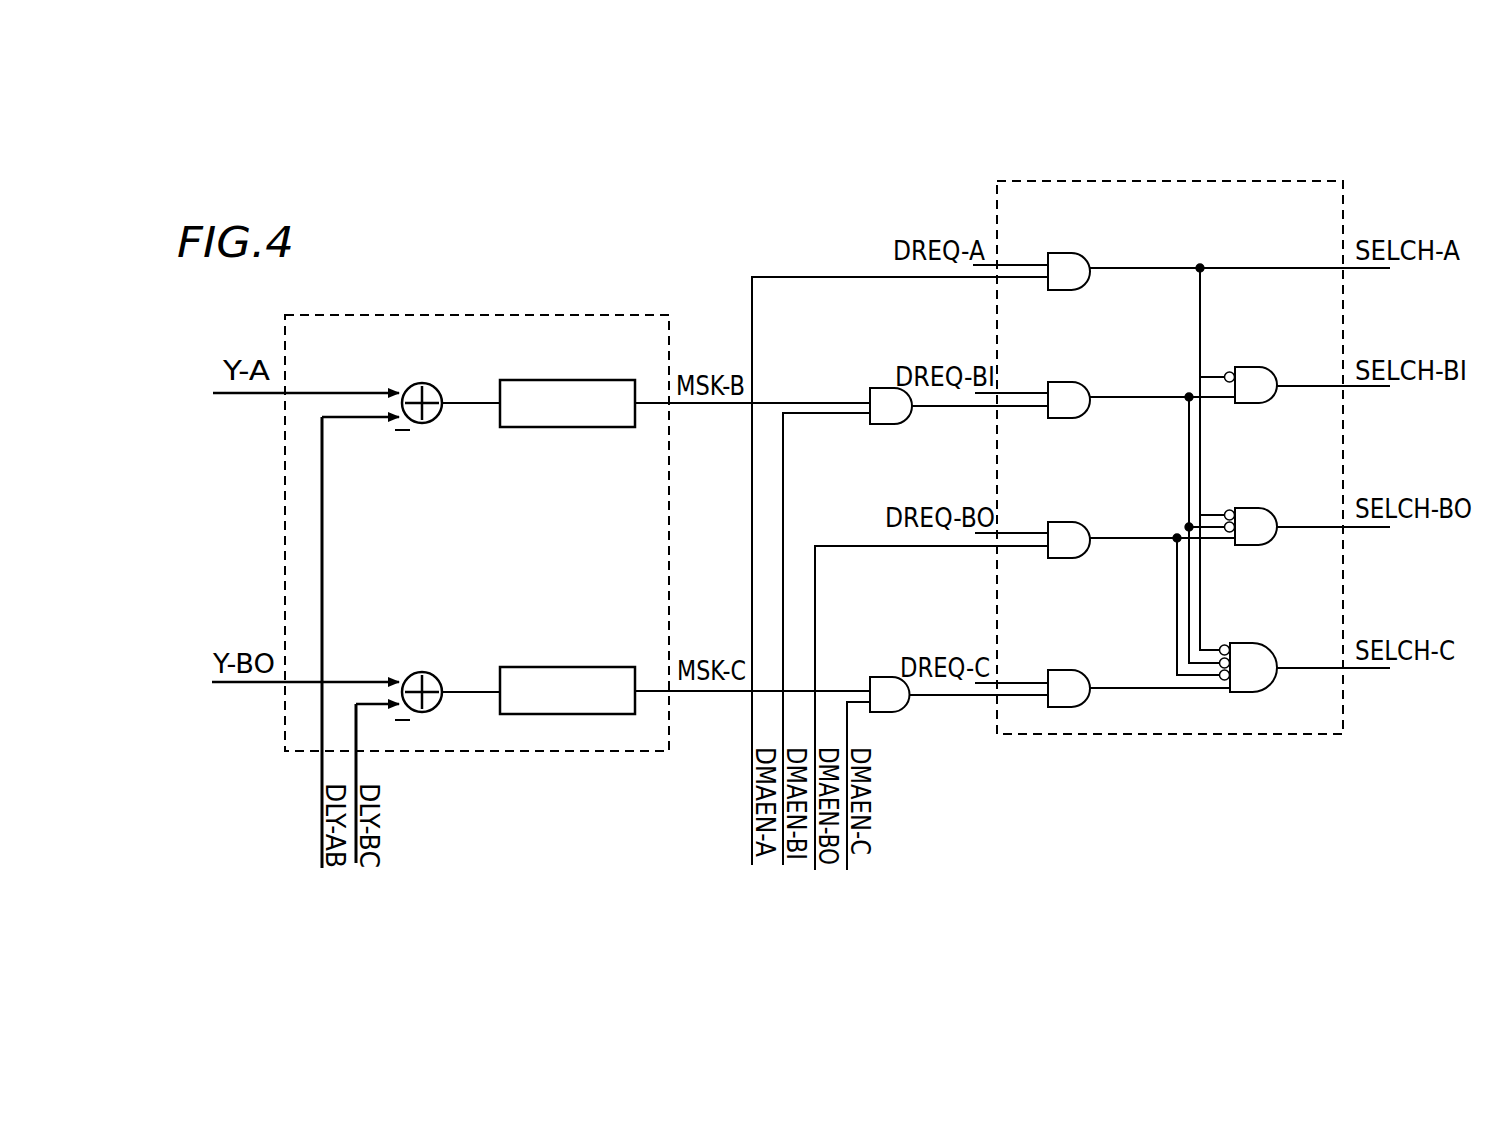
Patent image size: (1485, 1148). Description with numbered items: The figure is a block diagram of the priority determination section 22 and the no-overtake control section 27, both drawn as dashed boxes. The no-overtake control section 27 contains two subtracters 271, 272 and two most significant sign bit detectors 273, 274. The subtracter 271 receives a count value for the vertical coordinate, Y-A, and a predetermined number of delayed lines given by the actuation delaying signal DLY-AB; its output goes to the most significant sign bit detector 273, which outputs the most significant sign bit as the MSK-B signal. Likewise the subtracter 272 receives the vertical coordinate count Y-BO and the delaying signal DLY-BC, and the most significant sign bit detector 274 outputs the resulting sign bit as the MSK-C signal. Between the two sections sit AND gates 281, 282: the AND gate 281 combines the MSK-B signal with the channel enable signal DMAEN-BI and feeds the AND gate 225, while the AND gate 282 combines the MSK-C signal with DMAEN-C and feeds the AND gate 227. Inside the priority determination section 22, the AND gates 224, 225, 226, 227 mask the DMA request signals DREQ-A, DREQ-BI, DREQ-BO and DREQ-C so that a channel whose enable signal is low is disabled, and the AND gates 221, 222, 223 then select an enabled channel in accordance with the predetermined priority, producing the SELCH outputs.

The priority determination section 22 is at (1272, 178).
The no-overtake control section 27 is at (608, 315).
The subtracter 271 is at (432, 384).
The subtracter 272 is at (436, 673).
The most significant sign bit detector 273 is at (569, 428).
The most significant sign bit detector 274 is at (565, 667).
The AND gate 281 is at (880, 388).
The AND gate 282 is at (880, 677).
The AND gate 224 is at (1058, 252).
The AND gate 225 is at (1062, 382).
The AND gate 226 is at (1070, 522).
The AND gate 227 is at (1065, 670).
The AND gate 221 is at (1250, 367).
The AND gate 222 is at (1250, 508).
The AND gate 223 is at (1243, 643).